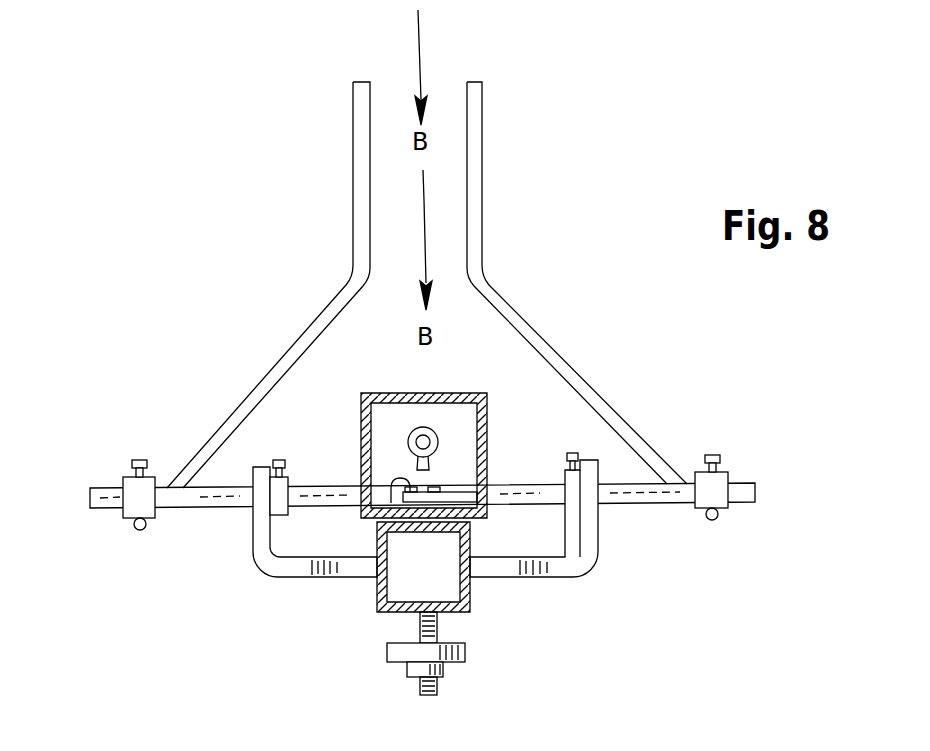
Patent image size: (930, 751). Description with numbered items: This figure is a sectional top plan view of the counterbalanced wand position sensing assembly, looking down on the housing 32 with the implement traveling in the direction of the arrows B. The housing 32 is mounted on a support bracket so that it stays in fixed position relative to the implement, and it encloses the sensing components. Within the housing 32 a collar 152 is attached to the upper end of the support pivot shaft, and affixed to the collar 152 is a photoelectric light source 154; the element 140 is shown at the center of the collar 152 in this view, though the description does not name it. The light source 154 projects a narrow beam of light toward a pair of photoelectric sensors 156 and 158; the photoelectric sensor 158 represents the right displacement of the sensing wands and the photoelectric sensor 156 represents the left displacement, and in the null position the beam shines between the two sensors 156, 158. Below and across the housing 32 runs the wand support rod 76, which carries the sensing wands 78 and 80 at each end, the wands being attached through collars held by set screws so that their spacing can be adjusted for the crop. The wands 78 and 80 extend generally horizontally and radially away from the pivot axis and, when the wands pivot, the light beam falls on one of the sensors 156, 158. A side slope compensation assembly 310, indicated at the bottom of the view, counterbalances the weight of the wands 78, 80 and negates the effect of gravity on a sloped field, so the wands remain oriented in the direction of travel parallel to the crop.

The housing 32 is at (361, 413).
The wand support rod 76 is at (207, 508).
The sensing wand 78 is at (482, 170).
The sensing wand 80 is at (353, 156).
The sensor 140 is at (430, 442).
The collar 152 is at (436, 431).
The photoelectric light source 154 is at (432, 470).
The photoelectric sensor 156 is at (487, 472).
The photoelectric sensor 158 is at (391, 503).
The side slope compensation assembly 310 is at (326, 643).